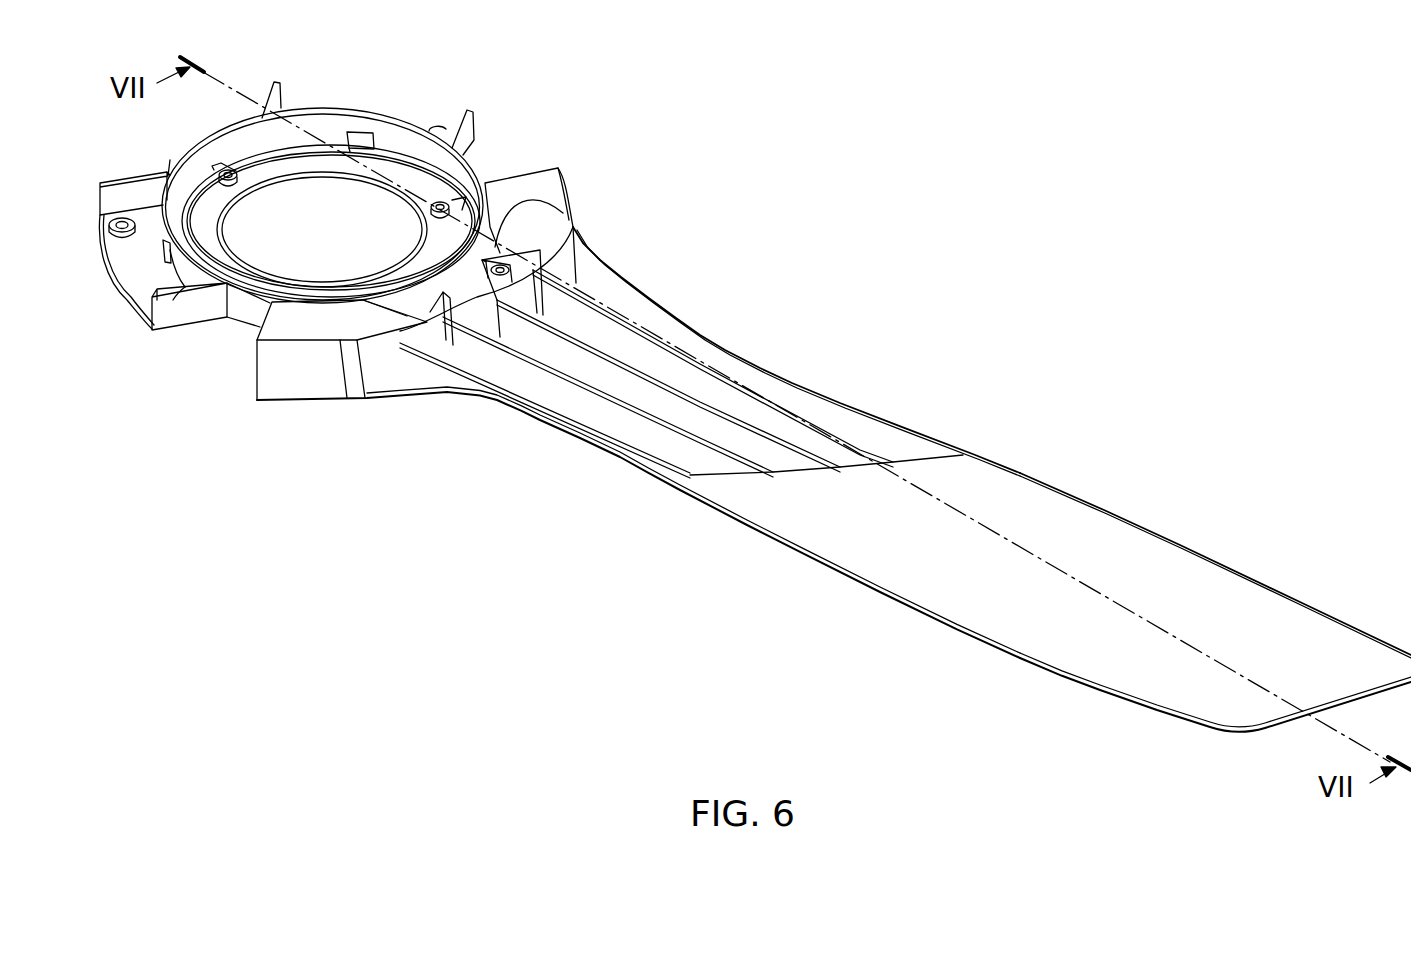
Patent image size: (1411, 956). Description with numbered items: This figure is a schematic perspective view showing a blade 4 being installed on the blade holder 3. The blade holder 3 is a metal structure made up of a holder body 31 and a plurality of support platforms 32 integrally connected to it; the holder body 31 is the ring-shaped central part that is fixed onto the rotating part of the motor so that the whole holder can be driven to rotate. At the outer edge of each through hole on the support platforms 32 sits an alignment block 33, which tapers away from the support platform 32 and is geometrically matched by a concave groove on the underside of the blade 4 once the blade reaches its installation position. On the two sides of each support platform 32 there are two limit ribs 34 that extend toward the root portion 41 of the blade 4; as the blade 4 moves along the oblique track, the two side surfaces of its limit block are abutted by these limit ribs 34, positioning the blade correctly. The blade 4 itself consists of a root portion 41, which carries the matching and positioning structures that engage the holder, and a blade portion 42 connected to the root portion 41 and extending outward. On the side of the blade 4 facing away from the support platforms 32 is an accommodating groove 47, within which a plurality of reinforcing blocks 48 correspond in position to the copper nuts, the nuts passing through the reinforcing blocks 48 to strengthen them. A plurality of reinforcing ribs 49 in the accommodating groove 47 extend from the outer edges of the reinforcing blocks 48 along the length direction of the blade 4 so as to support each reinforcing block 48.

The blade holder 3 is at (98, 275).
The holder body 31 is at (226, 152).
The support platform 32 is at (404, 112).
The alignment block 33 is at (440, 128).
The limit rib 34 is at (276, 105).
The blade 4 is at (781, 374).
The root portion 41 is at (530, 188).
The blade portion 42 is at (1013, 500).
The accommodating groove 47 is at (437, 326).
The reinforcing block 48 is at (547, 270).
The reinforcing rib 49 is at (562, 212).